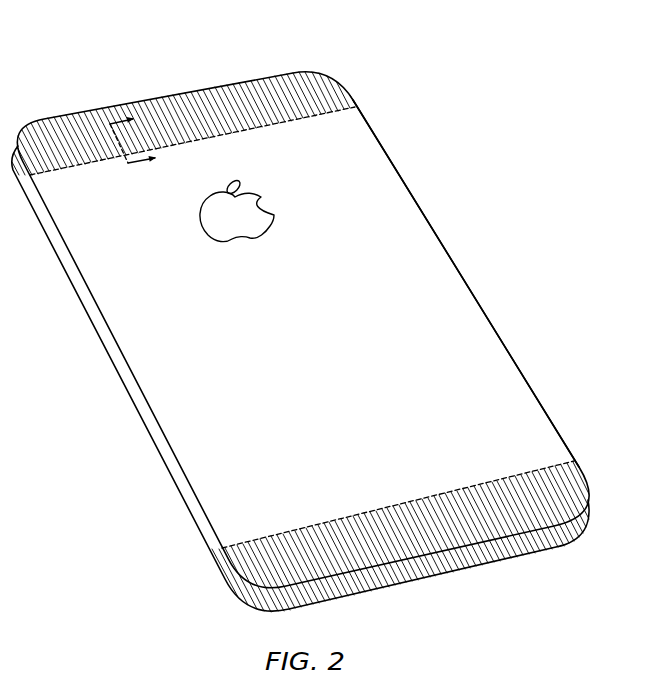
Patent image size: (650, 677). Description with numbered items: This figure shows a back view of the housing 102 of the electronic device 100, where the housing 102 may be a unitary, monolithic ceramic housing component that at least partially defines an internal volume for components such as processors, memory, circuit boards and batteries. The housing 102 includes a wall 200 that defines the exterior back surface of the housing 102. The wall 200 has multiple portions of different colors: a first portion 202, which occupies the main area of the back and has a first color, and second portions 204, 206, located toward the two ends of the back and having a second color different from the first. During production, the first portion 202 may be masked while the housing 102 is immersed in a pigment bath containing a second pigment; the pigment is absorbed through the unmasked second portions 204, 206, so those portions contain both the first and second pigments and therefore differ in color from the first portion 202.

The electronic device 100 is at (462, 61).
The housing 102 is at (90, 323).
The wall 200 is at (424, 275).
The first portion 202 is at (399, 176).
The second portion 204 is at (578, 470).
The second portion 206 is at (349, 89).